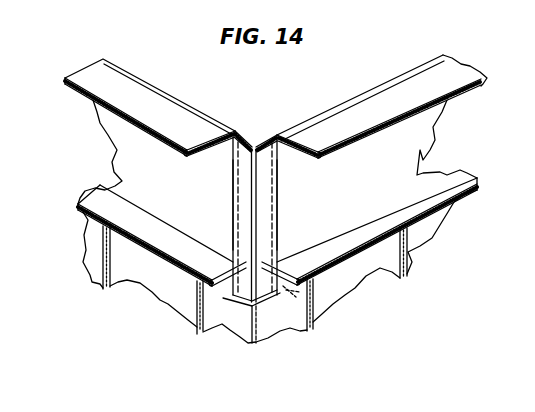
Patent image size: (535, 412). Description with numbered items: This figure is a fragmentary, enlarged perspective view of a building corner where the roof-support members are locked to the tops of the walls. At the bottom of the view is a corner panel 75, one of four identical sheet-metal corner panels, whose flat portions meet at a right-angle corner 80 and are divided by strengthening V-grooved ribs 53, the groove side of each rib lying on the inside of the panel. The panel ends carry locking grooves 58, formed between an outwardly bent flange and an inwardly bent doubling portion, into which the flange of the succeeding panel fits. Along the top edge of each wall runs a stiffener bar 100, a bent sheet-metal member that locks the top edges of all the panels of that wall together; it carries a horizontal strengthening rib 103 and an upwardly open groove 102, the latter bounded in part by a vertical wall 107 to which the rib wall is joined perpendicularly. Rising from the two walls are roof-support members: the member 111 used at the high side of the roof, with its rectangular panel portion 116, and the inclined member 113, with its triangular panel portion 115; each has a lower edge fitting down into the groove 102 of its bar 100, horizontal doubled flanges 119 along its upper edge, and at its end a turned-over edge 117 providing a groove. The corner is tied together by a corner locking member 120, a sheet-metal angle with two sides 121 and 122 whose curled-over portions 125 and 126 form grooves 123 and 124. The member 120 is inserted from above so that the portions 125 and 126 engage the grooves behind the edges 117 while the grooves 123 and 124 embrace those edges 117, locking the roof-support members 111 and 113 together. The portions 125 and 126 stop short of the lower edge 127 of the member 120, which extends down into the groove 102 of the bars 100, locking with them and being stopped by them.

The roof-support member 111 is at (188, 104).
The roof-support member 113 is at (399, 81).
The horizontal doubled flanges 119 is at (131, 111).
The groove 123 is at (295, 141).
The groove 124 is at (232, 140).
The curled-over portion 125 is at (263, 141).
The curled-over portion 126 is at (249, 141).
The corner locking member 120 is at (279, 185).
The side 121 is at (277, 167).
The side 122 is at (232, 183).
The turned-over edge 117 is at (237, 198).
The rectangular panel portion 116 is at (142, 175).
The triangular panel portion 115 is at (367, 156).
The stiffener bar 100 is at (100, 190).
The groove 102 is at (204, 231).
The strengthening rib 103 is at (112, 221).
The lower edge 127 is at (305, 291).
The vertical wall 107 is at (251, 303).
The right-angle corner 80 is at (255, 332).
The locking groove 58 is at (103, 288).
The V-grooved rib 53 is at (198, 318).
The corner panel 75 is at (180, 296).